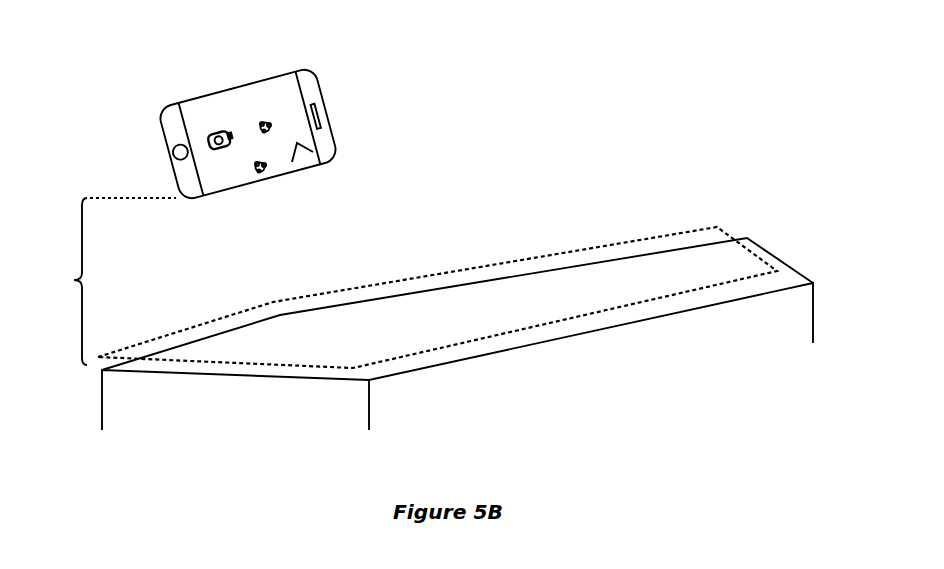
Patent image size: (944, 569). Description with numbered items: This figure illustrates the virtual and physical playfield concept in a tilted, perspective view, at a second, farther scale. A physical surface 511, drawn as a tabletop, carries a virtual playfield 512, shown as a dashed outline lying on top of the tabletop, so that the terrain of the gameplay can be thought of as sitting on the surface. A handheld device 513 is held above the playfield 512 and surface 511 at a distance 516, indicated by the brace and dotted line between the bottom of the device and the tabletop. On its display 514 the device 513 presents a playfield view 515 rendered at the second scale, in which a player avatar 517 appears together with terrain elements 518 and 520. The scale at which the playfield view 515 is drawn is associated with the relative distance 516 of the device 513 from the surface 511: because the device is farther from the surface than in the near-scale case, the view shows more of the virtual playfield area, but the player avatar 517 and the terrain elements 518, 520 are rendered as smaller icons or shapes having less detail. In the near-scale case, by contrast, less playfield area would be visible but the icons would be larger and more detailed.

The surface 511 is at (815, 304).
The playfield 512 is at (721, 225).
The device 513 is at (324, 71).
The display 514 is at (292, 63).
The playfield view 515 is at (238, 103).
The distance 516 is at (107, 281).
The player avatar 517 is at (212, 122).
The terrain element 518 is at (264, 171).
The terrain element 520 is at (300, 146).